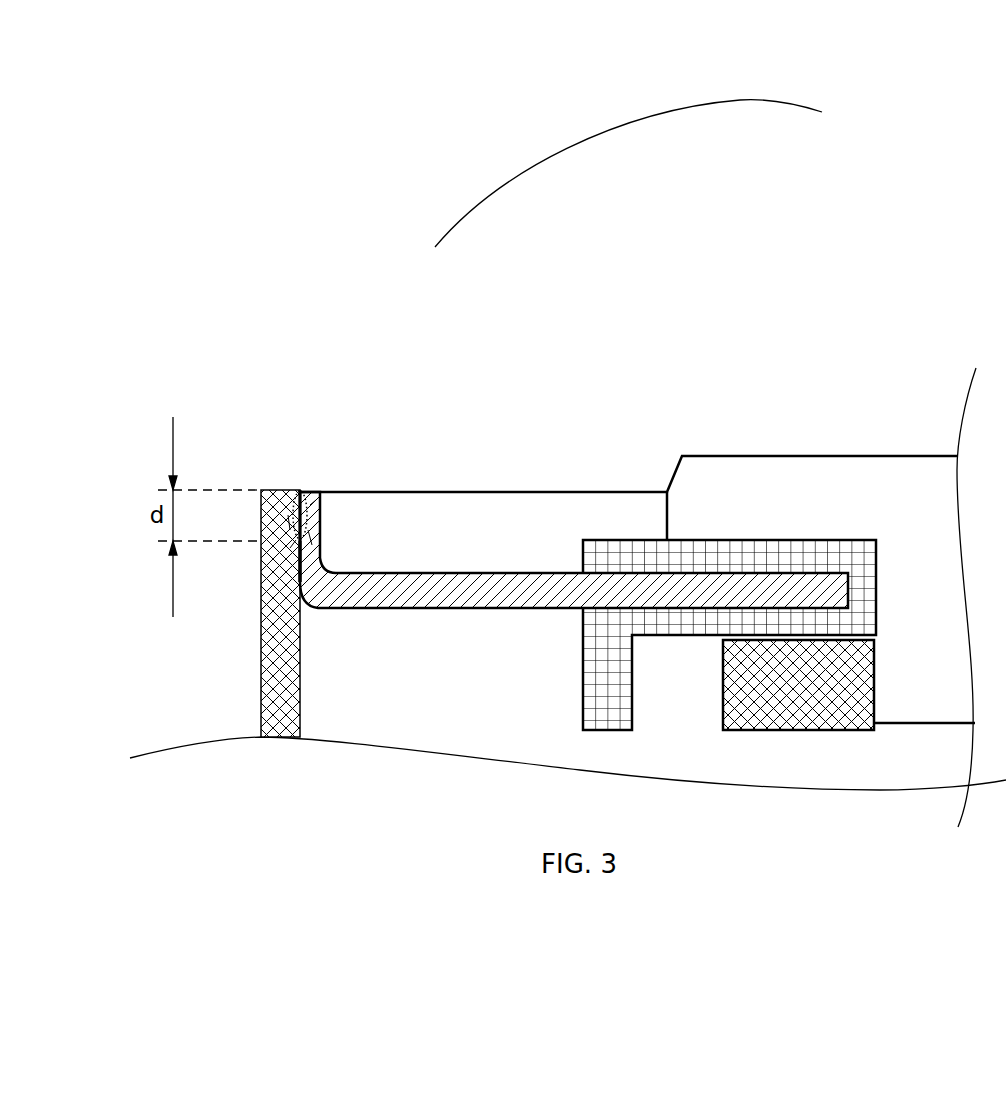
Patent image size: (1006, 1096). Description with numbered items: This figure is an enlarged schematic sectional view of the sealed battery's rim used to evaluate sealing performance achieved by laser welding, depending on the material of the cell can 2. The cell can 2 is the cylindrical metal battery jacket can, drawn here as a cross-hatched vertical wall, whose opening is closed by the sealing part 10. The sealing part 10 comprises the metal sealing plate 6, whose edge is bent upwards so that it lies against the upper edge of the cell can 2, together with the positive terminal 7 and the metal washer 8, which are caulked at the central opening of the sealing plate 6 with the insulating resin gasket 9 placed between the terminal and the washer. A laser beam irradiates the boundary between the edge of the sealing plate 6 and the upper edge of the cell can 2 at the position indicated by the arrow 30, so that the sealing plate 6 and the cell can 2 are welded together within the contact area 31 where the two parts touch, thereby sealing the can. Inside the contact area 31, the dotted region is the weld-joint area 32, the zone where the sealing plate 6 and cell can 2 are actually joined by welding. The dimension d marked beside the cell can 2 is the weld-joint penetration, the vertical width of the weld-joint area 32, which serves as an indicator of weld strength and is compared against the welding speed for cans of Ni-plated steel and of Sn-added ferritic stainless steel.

The cell can 2 is at (273, 682).
The sealing plate 6 is at (455, 573).
The positive terminal 7 is at (755, 487).
The washer 8 is at (847, 687).
The gasket 9 is at (617, 563).
The sealing part 10 is at (628, 168).
The laser irradiation position 30 is at (300, 490).
The contact area 31 is at (258, 590).
The weld-joint area 32 is at (322, 514).